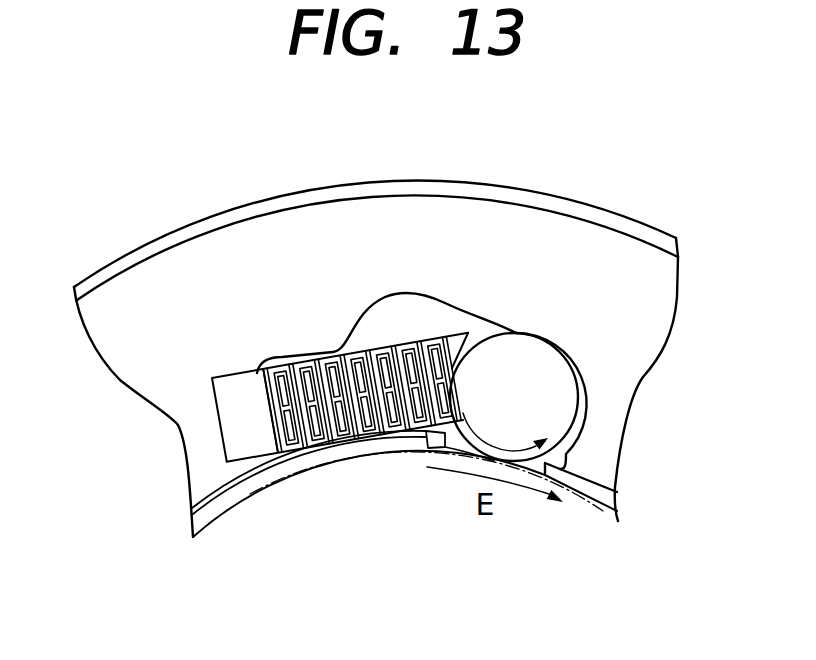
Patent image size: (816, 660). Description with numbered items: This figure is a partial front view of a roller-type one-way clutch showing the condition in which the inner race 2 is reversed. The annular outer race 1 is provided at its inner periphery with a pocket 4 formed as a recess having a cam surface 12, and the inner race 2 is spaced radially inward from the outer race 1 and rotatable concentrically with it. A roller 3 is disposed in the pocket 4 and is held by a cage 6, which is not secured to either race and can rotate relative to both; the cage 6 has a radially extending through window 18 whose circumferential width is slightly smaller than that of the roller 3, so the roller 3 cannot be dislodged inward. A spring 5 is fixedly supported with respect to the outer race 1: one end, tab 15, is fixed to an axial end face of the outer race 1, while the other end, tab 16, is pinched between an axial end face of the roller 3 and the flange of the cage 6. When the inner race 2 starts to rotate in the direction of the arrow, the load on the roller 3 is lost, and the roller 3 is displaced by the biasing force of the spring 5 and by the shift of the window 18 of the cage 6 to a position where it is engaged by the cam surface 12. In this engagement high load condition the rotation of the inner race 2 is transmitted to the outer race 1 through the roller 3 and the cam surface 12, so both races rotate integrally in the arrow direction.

The outer race 1 is at (164, 294).
The inner race 2 is at (256, 548).
The roller 3 is at (520, 352).
The pocket 4 is at (410, 303).
The spring 5 is at (320, 372).
The cage 6 is at (602, 497).
The cam surface 12 is at (555, 342).
The tab 15 is at (233, 418).
The tab 16 is at (453, 348).
The window 18 is at (430, 438).